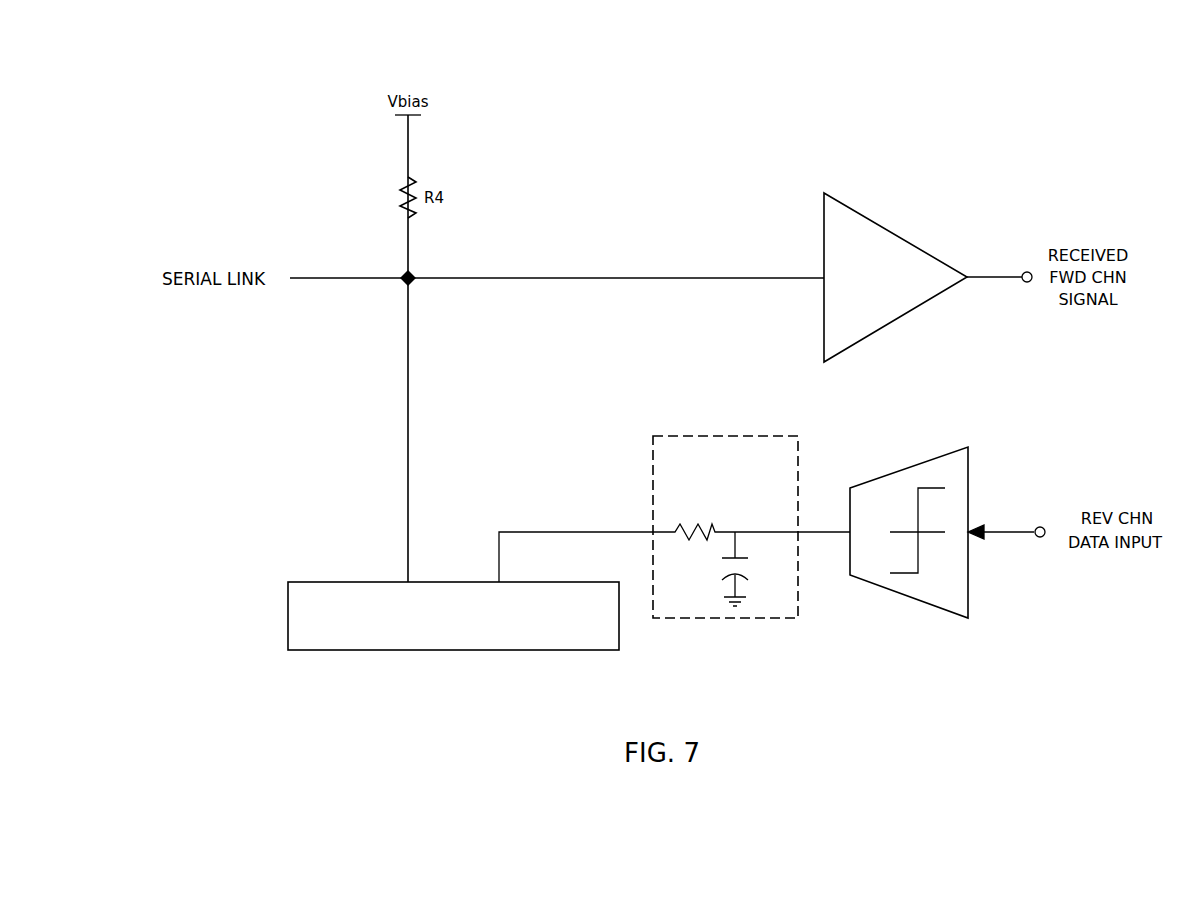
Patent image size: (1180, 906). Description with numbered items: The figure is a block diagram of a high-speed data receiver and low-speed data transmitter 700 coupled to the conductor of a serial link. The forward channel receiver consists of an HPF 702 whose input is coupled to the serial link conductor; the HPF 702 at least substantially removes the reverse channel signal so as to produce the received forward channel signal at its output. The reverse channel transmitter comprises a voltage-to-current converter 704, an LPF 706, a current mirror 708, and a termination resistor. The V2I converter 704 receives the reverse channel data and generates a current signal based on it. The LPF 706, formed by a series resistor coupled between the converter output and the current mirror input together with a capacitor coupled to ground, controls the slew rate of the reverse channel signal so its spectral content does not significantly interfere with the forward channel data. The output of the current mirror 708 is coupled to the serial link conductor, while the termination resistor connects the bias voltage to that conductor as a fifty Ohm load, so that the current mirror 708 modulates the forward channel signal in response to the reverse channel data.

The high-speed data receiver and low-speed data transmitter 700 is at (957, 110).
The HPF 702 is at (867, 218).
The voltage-to-current (V2I) converter 704 is at (943, 453).
The LPF 706 is at (775, 433).
The current mirror 708 is at (300, 580).